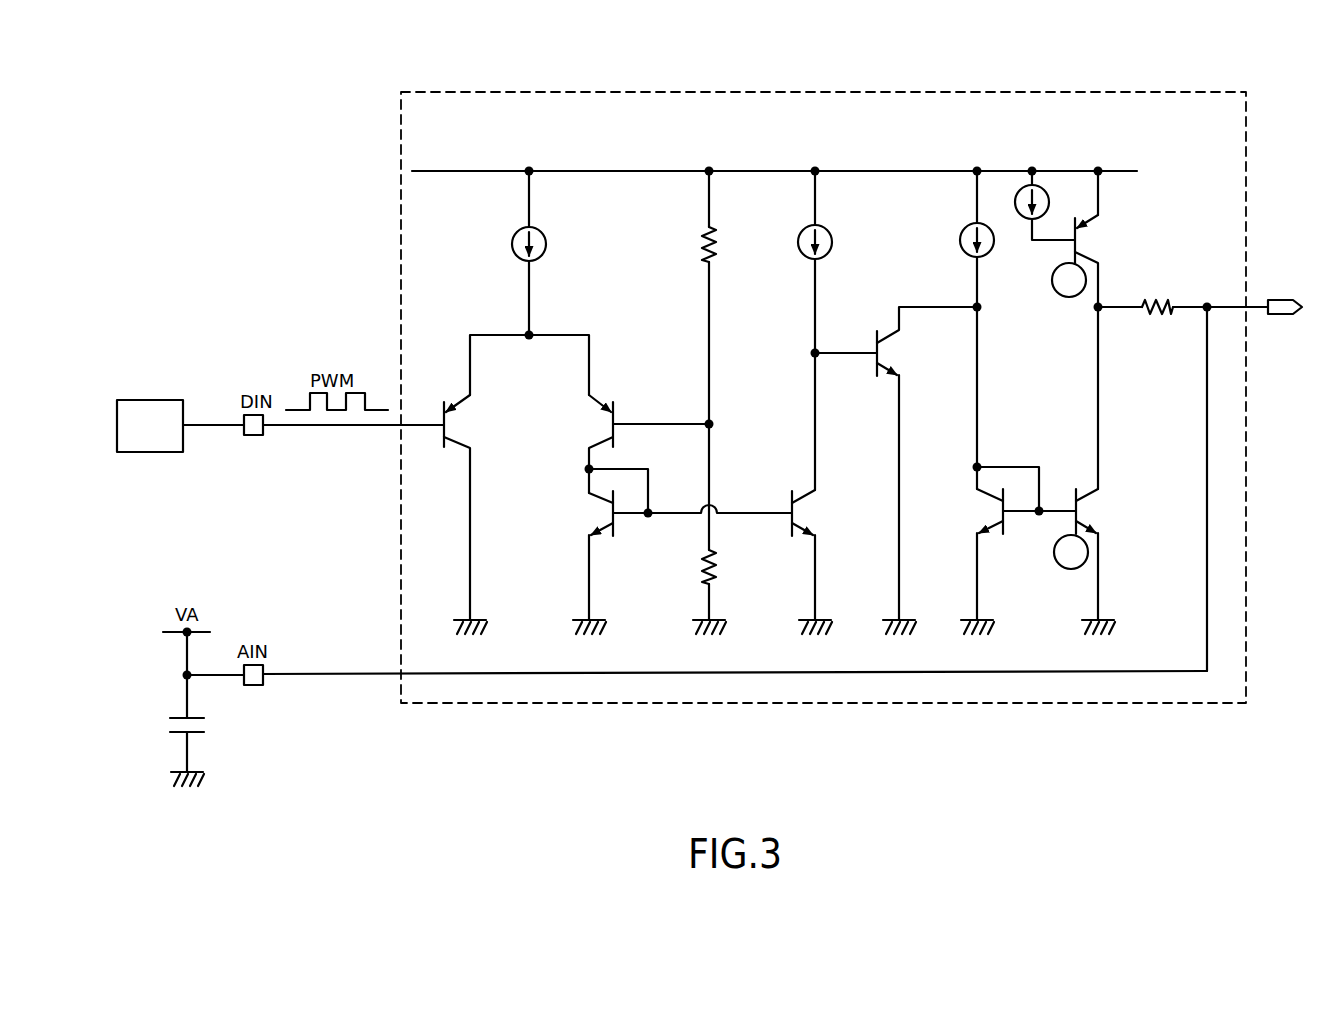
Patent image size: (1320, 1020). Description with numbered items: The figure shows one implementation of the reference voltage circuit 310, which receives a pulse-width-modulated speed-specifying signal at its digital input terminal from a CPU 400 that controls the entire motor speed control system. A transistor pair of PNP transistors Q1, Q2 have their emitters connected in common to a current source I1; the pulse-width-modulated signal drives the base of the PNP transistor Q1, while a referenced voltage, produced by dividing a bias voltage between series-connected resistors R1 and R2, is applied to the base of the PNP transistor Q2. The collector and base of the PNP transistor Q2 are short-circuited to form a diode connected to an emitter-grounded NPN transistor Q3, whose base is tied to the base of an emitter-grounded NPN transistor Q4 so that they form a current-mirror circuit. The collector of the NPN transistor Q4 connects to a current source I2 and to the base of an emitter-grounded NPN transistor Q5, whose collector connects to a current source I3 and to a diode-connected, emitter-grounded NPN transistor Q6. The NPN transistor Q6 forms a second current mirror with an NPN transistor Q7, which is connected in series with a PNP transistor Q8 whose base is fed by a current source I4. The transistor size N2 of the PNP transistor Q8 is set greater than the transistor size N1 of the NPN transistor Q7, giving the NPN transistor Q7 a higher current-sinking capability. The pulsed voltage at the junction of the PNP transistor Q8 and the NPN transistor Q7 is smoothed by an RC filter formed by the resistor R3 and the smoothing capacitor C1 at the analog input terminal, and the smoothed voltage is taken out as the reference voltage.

The reference voltage circuit 310 is at (975, 93).
The CPU 400 is at (149, 400).
The PNP transistor Q1 is at (470, 507).
The PNP transistor Q2 is at (588, 444).
The NPN transistor Q3 is at (587, 555).
The NPN transistor Q4 is at (818, 555).
The NPN transistor Q5 is at (927, 463).
The NPN transistor Q6 is at (977, 554).
The NPN transistor Q7 is at (1103, 554).
The PNP transistor Q8 is at (1101, 352).
The resistor R1 is at (725, 244).
The resistor R2 is at (725, 567).
The resistor R3 is at (1157, 296).
The current source I1 is at (542, 244).
The current source I2 is at (828, 242).
The current source I3 is at (990, 240).
The current source I4 is at (1045, 202).
The smoothing capacitor C1 is at (203, 728).
The transistor size N1 is at (1069, 280).
The transistor size N2 is at (1071, 552).